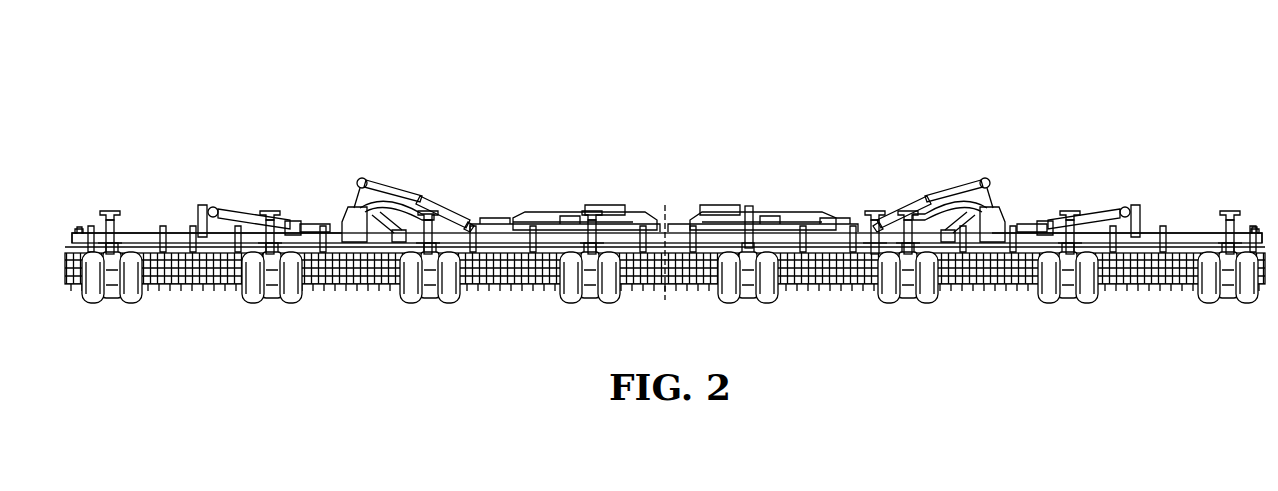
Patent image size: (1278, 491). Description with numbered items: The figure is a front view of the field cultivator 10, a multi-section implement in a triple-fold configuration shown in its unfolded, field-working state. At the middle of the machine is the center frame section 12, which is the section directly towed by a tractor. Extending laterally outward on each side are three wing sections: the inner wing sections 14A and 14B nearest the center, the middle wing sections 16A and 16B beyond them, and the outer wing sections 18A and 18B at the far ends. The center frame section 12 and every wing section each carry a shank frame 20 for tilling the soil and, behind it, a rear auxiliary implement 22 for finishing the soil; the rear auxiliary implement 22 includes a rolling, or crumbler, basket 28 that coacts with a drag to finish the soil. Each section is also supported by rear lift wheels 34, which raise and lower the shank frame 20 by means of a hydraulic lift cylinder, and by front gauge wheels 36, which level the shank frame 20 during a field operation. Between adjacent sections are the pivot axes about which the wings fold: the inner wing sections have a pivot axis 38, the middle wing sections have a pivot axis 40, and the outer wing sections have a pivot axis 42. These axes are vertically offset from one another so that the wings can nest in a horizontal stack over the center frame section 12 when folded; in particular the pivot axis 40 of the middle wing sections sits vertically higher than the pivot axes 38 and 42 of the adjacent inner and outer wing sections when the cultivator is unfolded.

The field cultivator 10 is at (912, 66).
The center frame section 12 is at (744, 196).
The inner wing section 14A is at (916, 178).
The inner wing section 14B is at (453, 175).
The middle wing section 16A is at (1058, 188).
The middle wing section 16B is at (297, 180).
The outer wing section 18A is at (1197, 208).
The outer wing section 18B is at (151, 177).
The shank frame 20 is at (142, 235).
The rear auxiliary implement 22 is at (166, 289).
The rolling basket 28 is at (480, 303).
The rear lift wheels 34 is at (256, 303).
The front gauge wheels 36 is at (1065, 303).
The pivot axis 38 is at (535, 192).
The pivot axis 40 is at (370, 183).
The pivot axis 42 is at (210, 208).